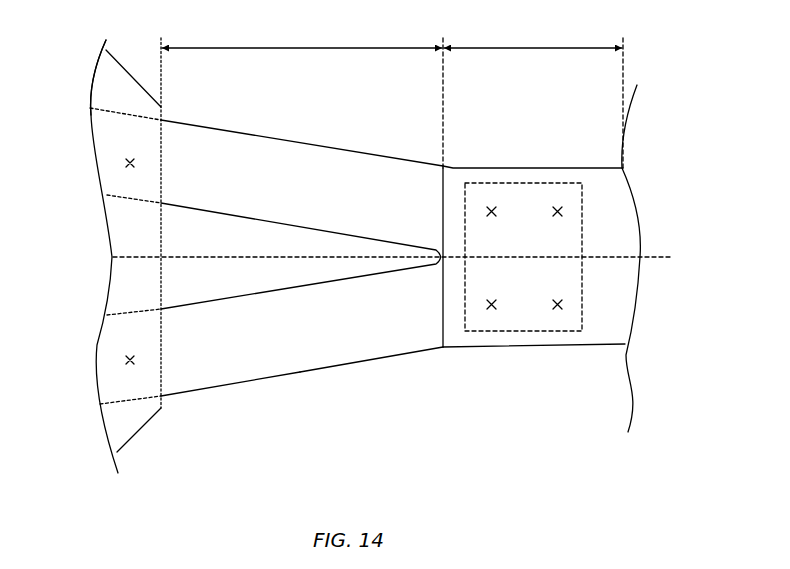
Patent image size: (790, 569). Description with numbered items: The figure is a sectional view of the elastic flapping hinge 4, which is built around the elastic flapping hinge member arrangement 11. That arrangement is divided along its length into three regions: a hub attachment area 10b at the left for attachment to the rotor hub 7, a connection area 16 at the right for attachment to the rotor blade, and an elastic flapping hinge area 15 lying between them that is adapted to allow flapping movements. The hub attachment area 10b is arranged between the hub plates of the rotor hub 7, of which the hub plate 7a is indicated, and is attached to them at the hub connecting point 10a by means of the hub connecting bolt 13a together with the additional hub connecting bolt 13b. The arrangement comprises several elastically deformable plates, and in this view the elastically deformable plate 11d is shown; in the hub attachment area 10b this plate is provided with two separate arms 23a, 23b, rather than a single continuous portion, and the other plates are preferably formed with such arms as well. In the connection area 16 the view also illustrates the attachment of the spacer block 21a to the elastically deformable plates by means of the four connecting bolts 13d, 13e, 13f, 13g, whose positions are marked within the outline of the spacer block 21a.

The elastic flapping hinge 4 is at (338, 106).
The rotor hub 7 is at (114, 46).
The hub plate 7a is at (117, 82).
The hub connecting point 10a is at (128, 380).
The hub attachment area 10b is at (127, 141).
The elastic flapping hinge member arrangement 11 is at (330, 382).
The elastically deformable plate 11d is at (602, 178).
The hub connecting bolt 13a is at (128, 165).
The hub connecting bolt 13b is at (128, 362).
The connecting bolt 13d is at (492, 208).
The connecting bolt 13e is at (560, 212).
The connecting bolt 13f is at (558, 309).
The connecting bolt 13g is at (492, 309).
The elastic flapping hinge area 15 is at (297, 48).
The connection area 16 is at (525, 48).
The spacer block 21a is at (556, 278).
The arm 23a is at (228, 160).
The arm 23b is at (227, 353).